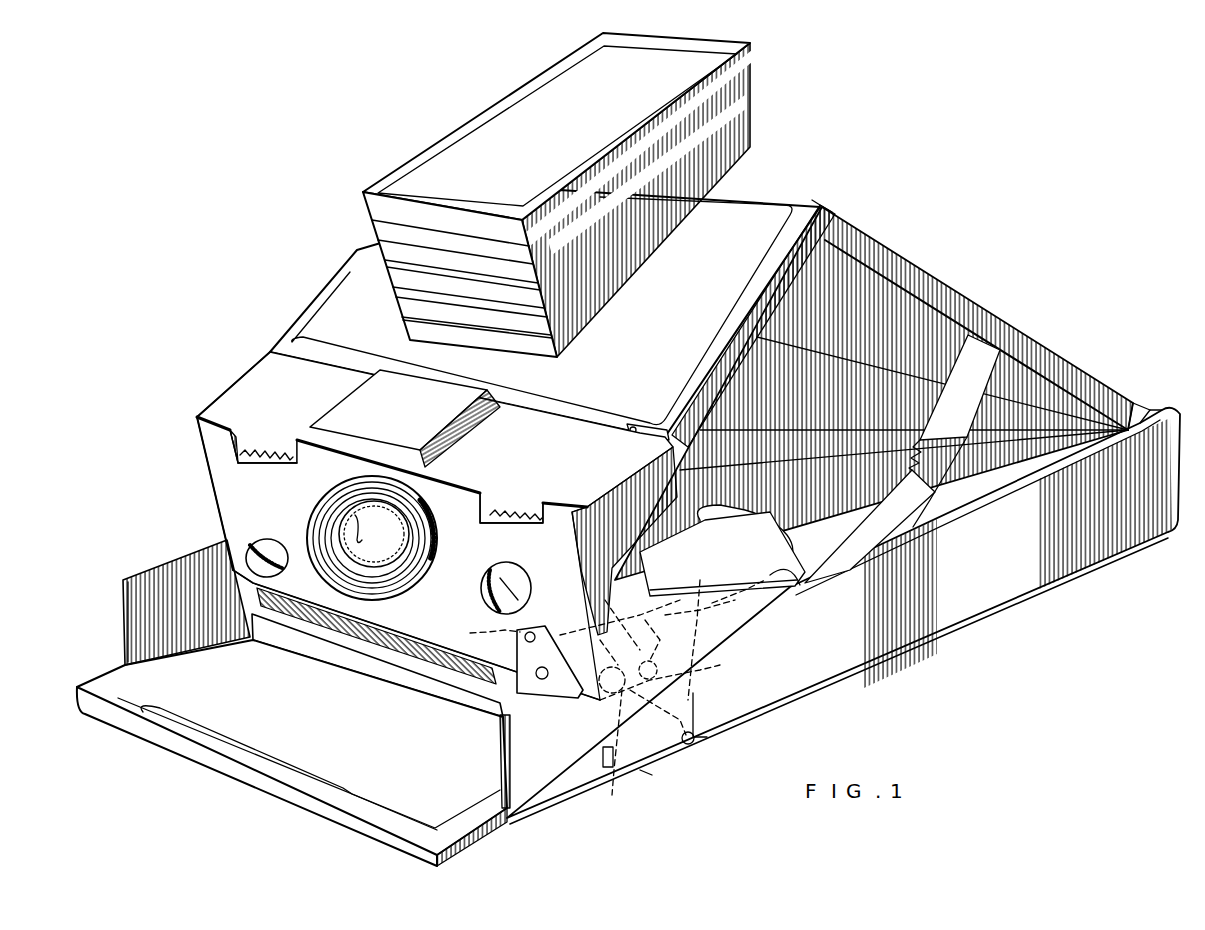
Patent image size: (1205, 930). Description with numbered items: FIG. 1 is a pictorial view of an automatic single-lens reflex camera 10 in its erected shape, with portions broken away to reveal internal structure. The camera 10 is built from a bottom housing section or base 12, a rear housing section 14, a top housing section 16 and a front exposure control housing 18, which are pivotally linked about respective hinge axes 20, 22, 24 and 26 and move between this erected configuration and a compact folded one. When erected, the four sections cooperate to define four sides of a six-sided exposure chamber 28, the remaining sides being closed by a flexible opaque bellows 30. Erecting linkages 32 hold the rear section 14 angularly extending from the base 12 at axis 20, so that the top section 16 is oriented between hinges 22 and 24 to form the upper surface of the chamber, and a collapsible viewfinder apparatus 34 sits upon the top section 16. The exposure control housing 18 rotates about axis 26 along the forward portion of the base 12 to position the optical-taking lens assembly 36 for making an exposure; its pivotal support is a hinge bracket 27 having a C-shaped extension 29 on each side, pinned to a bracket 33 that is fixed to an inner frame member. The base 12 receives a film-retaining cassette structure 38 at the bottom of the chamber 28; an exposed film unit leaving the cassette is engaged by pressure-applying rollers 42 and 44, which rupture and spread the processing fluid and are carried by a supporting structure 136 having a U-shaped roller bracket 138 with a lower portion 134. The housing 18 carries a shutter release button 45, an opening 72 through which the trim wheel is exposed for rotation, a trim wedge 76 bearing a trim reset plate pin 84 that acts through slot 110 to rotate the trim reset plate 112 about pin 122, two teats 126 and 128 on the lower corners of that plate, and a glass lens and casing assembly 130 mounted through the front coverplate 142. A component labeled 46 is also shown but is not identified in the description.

The camera 10 is at (262, 318).
The bottom housing section 12 is at (870, 655).
The rear housing section 14 is at (975, 322).
The top housing section 16 is at (732, 215).
The front exposure control housing 18 is at (670, 560).
The hinge axis 20 is at (1122, 415).
The hinge axis 22 is at (824, 205).
The hinge axis 24 is at (642, 424).
The hinge axis 26 is at (690, 677).
The hinge bracket 27 is at (715, 611).
The exposure chamber 28 is at (727, 561).
The C-shaped extension 29 is at (680, 665).
The flexible bellows 30 is at (735, 360).
The erecting linkages 32 is at (880, 524).
The bracket 33 is at (640, 630).
The viewfinder apparatus 34 is at (440, 135).
The optical-taking lens assembly 36 is at (410, 558).
The cassette structure 38 is at (790, 588).
The pressure-applying roller 42 is at (618, 638).
The pressure-applying roller 44 is at (626, 754).
The shutter release button 45 is at (275, 546).
The focus wheel 46 is at (272, 450).
The opening 72 is at (496, 497).
The trim wedge 76 is at (528, 512).
The trim reset plate pin 84 is at (532, 634).
The slot 110 is at (560, 662).
The trim reset plate 112 is at (515, 632).
The pin 122 is at (470, 700).
The teat 126 is at (530, 690).
The teat 128 is at (402, 681).
The glass lens and casing assembly 130 is at (482, 588).
The lower portion 134 is at (603, 762).
The supporting structure 136 is at (656, 781).
The U-shaped roller bracket 138 is at (693, 745).
The front coverplate 142 is at (225, 488).